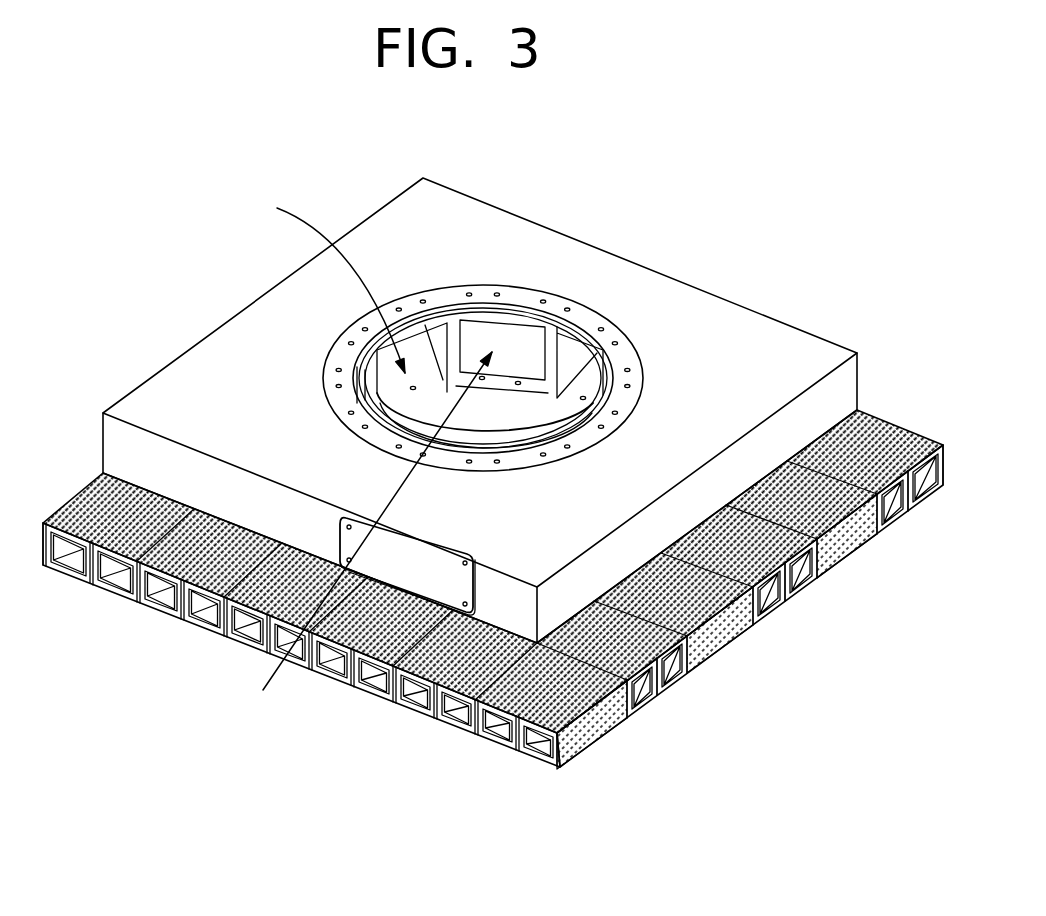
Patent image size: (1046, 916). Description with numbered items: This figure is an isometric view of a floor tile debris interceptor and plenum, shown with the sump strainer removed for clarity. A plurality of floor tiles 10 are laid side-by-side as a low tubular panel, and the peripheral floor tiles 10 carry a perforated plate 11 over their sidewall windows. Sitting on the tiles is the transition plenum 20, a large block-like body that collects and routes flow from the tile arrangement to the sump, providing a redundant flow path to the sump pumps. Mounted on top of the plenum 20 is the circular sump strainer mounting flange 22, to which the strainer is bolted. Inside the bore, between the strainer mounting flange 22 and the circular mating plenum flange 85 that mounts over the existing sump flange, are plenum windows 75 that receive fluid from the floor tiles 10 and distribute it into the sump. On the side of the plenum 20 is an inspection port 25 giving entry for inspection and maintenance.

The floor tiles 10 is at (887, 450).
The perforated plate 11 is at (610, 747).
The transition plenum 20 is at (728, 300).
The sump strainer mounting flange 22 is at (540, 288).
The inspection ports 25 is at (393, 561).
The plenum windows 75 is at (362, 530).
The mating plenum flange 85 is at (326, 284).